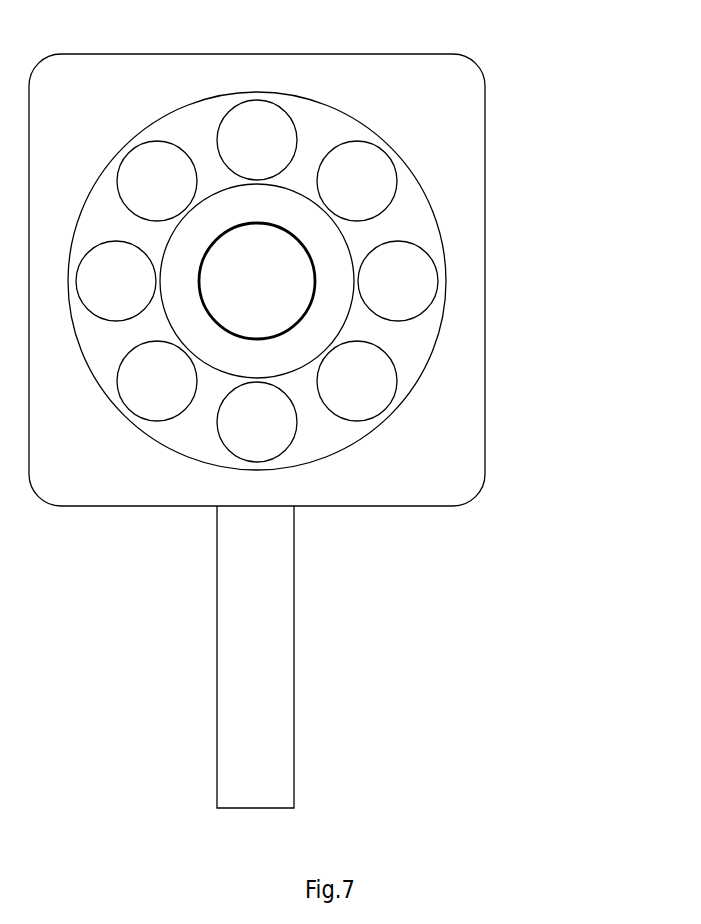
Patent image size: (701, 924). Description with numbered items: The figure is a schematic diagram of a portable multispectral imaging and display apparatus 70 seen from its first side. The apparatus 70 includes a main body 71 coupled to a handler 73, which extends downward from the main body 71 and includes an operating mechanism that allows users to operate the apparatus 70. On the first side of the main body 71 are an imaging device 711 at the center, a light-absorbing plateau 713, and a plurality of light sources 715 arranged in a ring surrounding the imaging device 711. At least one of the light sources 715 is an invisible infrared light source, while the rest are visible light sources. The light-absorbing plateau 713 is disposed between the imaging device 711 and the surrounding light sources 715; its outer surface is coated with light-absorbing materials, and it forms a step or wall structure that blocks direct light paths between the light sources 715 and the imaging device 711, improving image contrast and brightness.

The portable multispectral imaging and display apparatus 70 is at (323, 410).
The main body 71 is at (485, 95).
The imaging device 711 is at (292, 322).
The light-absorbing plateau 713 is at (352, 303).
The light sources 715 is at (432, 260).
The handler 73 is at (294, 652).